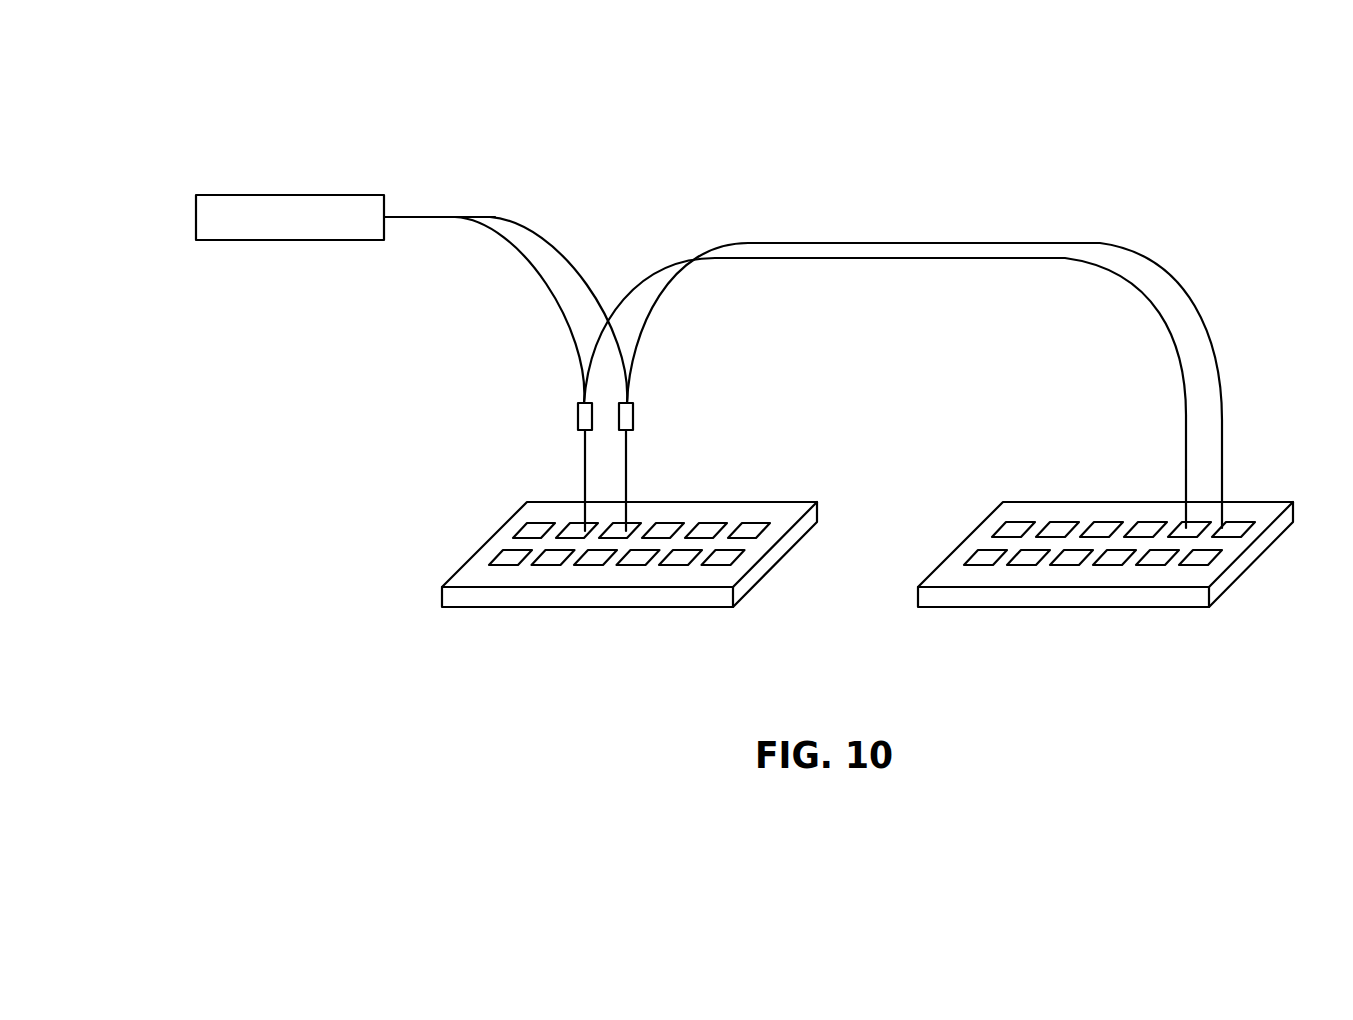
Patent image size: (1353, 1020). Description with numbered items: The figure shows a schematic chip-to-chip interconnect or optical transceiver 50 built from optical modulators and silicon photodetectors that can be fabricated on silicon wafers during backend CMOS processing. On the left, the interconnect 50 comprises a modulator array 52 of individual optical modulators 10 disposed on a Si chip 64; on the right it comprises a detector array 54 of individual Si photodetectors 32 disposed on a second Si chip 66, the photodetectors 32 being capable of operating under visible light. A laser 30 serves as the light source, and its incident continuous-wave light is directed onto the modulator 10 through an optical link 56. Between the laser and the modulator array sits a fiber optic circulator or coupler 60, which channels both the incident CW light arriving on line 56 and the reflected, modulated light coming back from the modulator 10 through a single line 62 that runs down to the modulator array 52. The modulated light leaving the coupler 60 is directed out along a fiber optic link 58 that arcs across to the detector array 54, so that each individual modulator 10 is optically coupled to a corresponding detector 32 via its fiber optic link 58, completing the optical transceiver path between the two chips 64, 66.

The chip-to-chip interconnect 50 is at (203, 85).
The laser 30 is at (228, 240).
The optical link 56 is at (557, 243).
The fiber optic link 58 is at (888, 243).
The fiber optic circulator or coupler 60 is at (577, 412).
The single line 62 is at (585, 480).
The modulator array 52 is at (463, 515).
The optical modulator 10 is at (578, 575).
The Si chip 64 is at (677, 607).
The Si chip 66 is at (1025, 607).
The detector array 54 is at (1158, 577).
The Si photodetector 32 is at (1197, 523).